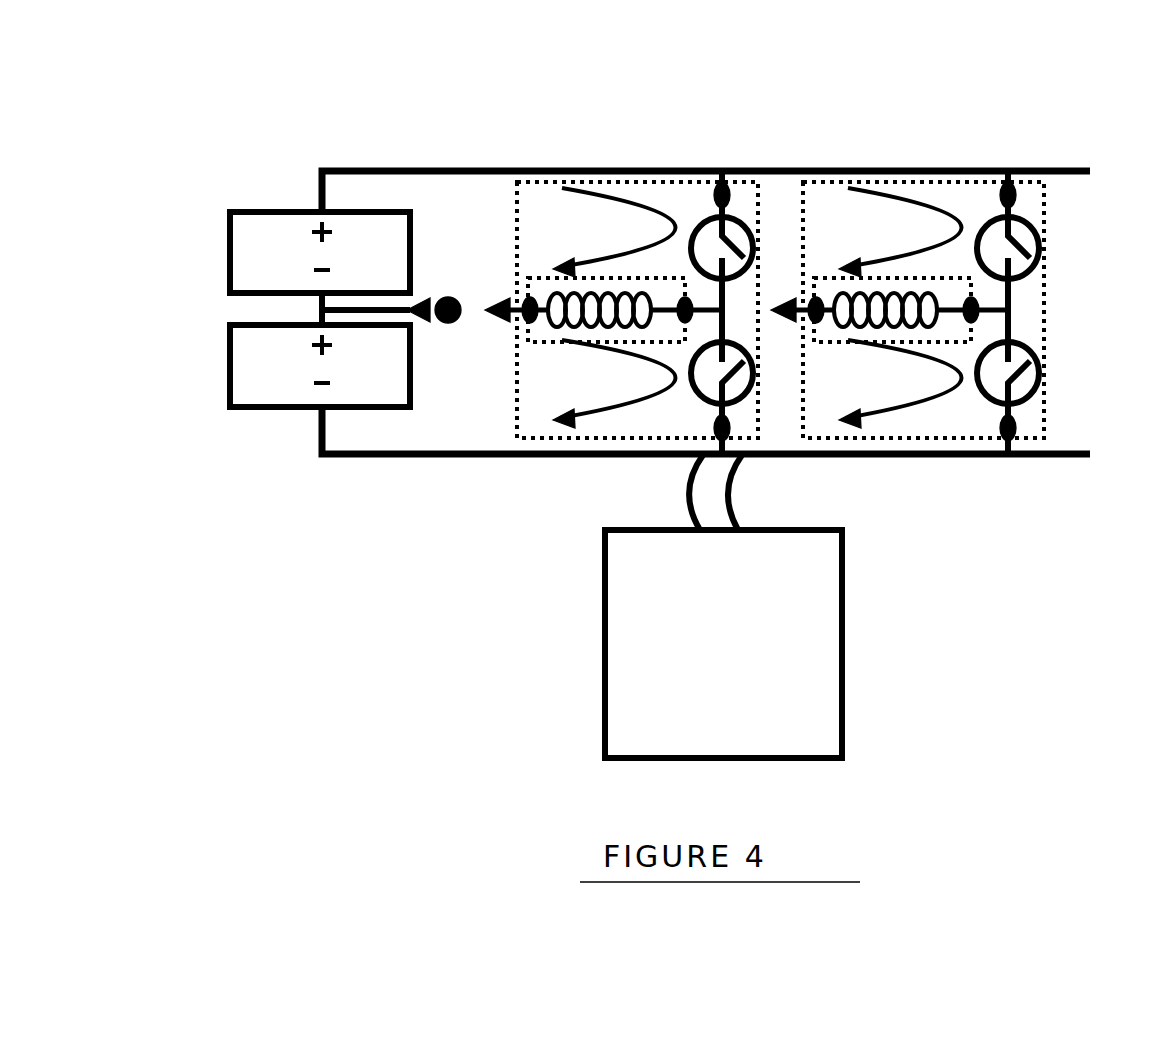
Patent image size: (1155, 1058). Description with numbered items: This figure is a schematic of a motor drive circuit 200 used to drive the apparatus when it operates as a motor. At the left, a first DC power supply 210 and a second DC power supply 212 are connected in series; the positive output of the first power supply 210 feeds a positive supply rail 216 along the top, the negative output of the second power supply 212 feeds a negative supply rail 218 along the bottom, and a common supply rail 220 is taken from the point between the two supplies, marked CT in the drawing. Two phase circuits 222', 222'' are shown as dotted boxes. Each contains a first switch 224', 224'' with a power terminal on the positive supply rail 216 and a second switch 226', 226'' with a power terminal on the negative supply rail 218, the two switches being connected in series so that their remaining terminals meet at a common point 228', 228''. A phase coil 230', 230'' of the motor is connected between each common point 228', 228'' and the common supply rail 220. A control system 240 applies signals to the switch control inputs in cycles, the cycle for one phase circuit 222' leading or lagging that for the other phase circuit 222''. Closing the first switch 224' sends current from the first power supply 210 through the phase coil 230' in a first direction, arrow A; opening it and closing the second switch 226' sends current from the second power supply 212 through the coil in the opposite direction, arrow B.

The motor drive circuit 200 is at (997, 620).
The first DC power supply 210 is at (238, 212).
The second DC power supply 212 is at (235, 408).
The positive supply rail 216 is at (422, 167).
The negative supply rail 218 is at (410, 456).
The common supply rail 220 is at (357, 312).
The center tap CT is at (447, 300).
The phase circuit 222' is at (621, 262).
The first switch 224' is at (752, 180).
The second switch 226' is at (683, 431).
The common point 228' is at (778, 384).
The phase coil 230' is at (575, 413).
The phase circuit 222'' is at (907, 259).
The first switch 224'' is at (1046, 180).
The second switch 226'' is at (1009, 434).
The common point 228'' is at (1080, 310).
The phase coil 230'' is at (892, 398).
The control system 240 is at (757, 670).
The arrow A is at (618, 192).
The arrow B is at (608, 414).